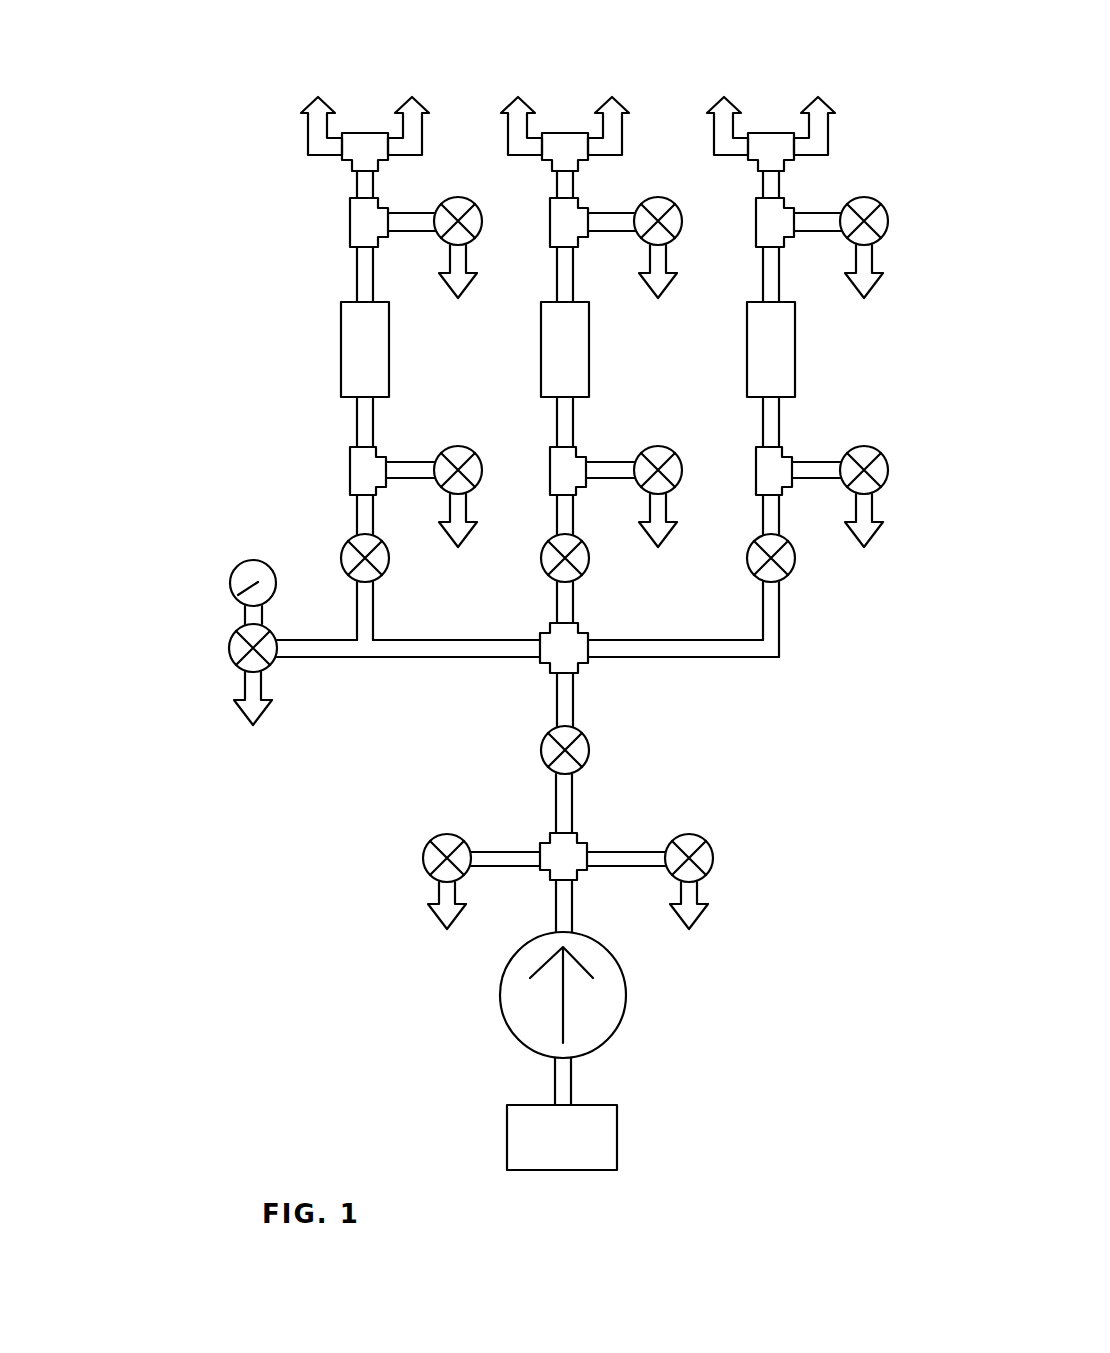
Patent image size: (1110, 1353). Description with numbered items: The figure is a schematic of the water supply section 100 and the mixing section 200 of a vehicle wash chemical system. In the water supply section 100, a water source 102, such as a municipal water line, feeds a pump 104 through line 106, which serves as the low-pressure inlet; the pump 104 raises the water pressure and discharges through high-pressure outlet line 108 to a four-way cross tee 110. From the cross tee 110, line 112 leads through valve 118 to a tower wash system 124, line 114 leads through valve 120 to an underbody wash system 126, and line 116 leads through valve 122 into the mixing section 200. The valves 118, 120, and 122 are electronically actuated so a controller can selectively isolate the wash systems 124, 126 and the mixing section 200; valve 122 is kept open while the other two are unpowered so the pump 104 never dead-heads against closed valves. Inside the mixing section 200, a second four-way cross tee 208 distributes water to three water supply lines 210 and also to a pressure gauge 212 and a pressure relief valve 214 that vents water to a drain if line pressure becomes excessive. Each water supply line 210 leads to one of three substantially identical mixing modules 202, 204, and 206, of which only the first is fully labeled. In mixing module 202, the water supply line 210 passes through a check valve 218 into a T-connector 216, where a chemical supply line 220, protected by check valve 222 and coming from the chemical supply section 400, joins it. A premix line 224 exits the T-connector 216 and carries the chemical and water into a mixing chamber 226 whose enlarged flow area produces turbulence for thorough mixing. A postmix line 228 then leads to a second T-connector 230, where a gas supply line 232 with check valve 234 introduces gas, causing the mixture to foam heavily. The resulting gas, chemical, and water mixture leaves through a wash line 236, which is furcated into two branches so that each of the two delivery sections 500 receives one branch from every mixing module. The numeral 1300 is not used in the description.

The water supply section 100 is at (196, 754).
The water source 102 is at (617, 1135).
The pump 104 is at (626, 990).
The line 106 is at (571, 1082).
The line 108 is at (556, 910).
The 4-way cross tee 110 is at (562, 860).
The line 112 is at (490, 852).
The line 114 is at (632, 852).
The line 116 is at (553, 808).
The valve 118 is at (423, 857).
The valve 120 is at (715, 857).
The valve 122 is at (540, 742).
The tower wash system 124 is at (432, 920).
The underbody wash system 126 is at (702, 918).
The mixing section 200 is at (195, 125).
The mixing module 202 is at (498, 88).
The mixing module 204 is at (705, 88).
The mixing module 206 is at (912, 88).
The 4-way cross tee 208 is at (595, 641).
The water supply line 210 is at (335, 611).
The pressure gauge 212 is at (230, 585).
The pressure relief valve 214 is at (230, 655).
The T-connector 216 is at (333, 473).
The check valve 218 is at (333, 555).
The chemical supply line 220 is at (415, 492).
The check valve 222 is at (490, 466).
The premix line 224 is at (326, 422).
The mixing chamber 226 is at (406, 349).
The postmix line 228 is at (323, 274).
The T-connector 230 is at (329, 225).
The gas supply line 232 is at (418, 201).
The check valve 234 is at (491, 219).
The wash line 236 is at (329, 147).
The chemical supply section 400 is at (458, 543).
The delivery section 500 is at (329, 133).
The upper branch outlet flow 1300 is at (460, 293).